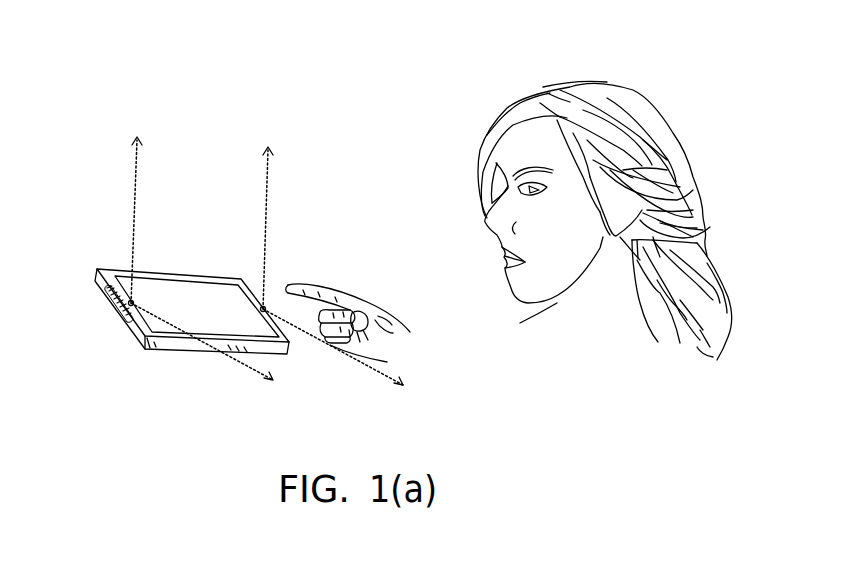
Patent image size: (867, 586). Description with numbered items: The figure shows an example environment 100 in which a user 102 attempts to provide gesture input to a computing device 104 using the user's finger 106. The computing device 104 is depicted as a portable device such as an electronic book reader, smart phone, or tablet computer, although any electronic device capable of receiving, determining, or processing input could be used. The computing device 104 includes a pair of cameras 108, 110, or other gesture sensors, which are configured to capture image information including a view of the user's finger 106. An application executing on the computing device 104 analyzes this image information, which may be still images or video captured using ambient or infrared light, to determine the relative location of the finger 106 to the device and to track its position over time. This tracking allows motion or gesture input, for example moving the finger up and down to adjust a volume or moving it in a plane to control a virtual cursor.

The example environment 100 is at (65, 85).
The user 102 is at (468, 137).
The computing device 104 is at (142, 271).
The user's finger 106 is at (334, 290).
The camera 108 is at (263, 307).
The camera 110 is at (127, 317).